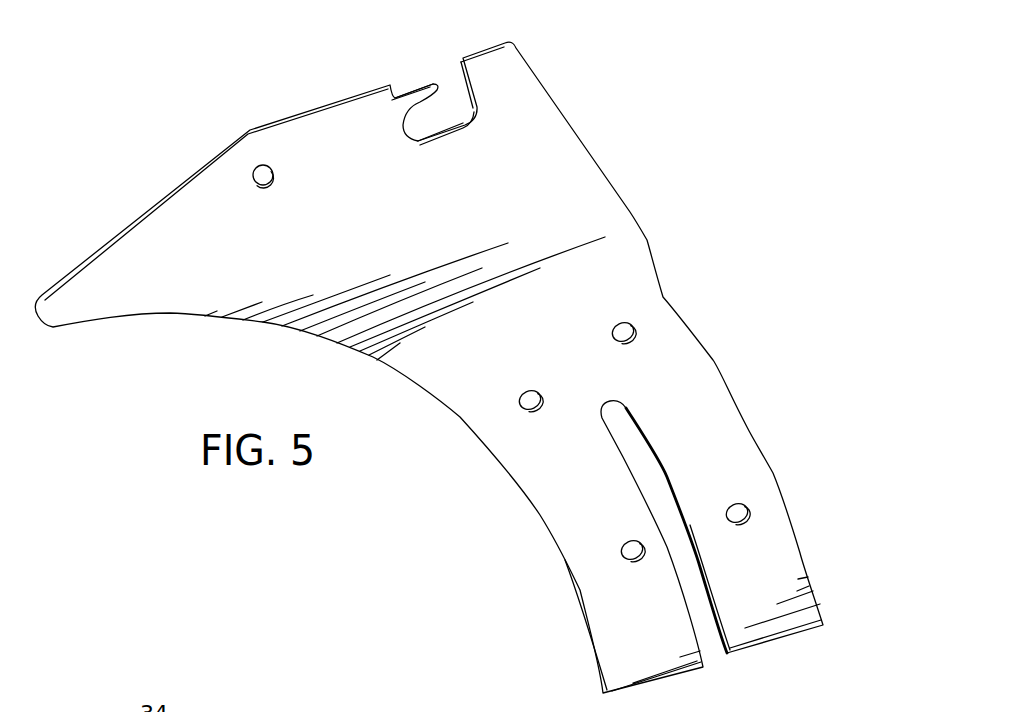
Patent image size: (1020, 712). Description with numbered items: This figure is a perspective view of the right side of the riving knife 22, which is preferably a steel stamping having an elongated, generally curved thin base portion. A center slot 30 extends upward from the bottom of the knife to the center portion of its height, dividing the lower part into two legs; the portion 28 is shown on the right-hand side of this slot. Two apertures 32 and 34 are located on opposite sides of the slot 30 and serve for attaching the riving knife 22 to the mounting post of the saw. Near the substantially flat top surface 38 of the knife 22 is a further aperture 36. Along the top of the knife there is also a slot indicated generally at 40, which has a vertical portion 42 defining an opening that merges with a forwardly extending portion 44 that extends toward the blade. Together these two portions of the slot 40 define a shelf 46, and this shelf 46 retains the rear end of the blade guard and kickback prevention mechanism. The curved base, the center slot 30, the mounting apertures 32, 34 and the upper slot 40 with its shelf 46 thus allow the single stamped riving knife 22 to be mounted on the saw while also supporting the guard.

The riving knife 22 is at (633, 212).
The leg tab 28 is at (678, 383).
The center slot 30 is at (655, 453).
The aperture 32 is at (612, 333).
The aperture 34 is at (621, 552).
The aperture 36 is at (259, 168).
The top surface 38 is at (288, 118).
The slot 40 is at (431, 63).
The vertical portion 42 is at (455, 88).
The forwardly extending portion 44 is at (415, 125).
The shelf 46 is at (427, 96).